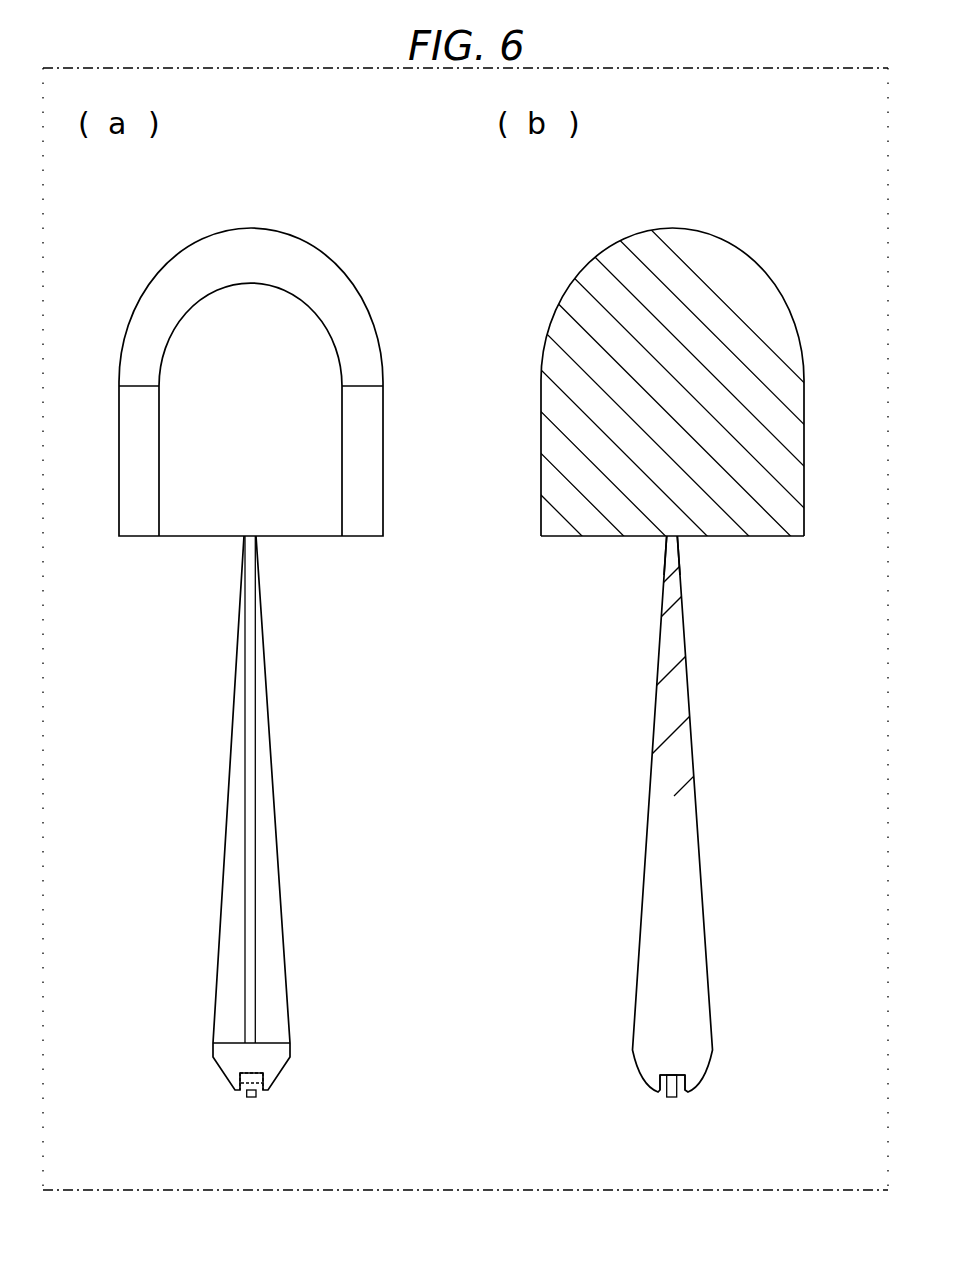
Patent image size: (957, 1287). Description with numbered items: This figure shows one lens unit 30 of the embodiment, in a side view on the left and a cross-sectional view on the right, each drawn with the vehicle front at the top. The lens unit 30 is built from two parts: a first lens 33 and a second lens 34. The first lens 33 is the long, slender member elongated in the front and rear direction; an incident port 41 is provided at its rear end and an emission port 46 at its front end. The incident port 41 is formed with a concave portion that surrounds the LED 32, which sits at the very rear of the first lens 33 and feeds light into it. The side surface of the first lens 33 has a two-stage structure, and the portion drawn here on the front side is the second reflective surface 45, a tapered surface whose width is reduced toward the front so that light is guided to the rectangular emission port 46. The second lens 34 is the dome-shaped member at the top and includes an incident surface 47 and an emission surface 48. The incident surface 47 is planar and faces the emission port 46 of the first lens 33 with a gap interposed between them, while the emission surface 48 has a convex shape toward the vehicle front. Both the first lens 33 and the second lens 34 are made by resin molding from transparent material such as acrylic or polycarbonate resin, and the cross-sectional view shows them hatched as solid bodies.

The lens unit 30 is at (611, 697).
The LED 32 is at (673, 1098).
The first lens 33 is at (409, 829).
The second lens 34 is at (593, 307).
The incident port 41 is at (212, 1098).
The second reflective surface 45 is at (697, 842).
The emission port 46 is at (677, 537).
The incident surface 47 is at (777, 537).
The emission surface 48 is at (790, 320).